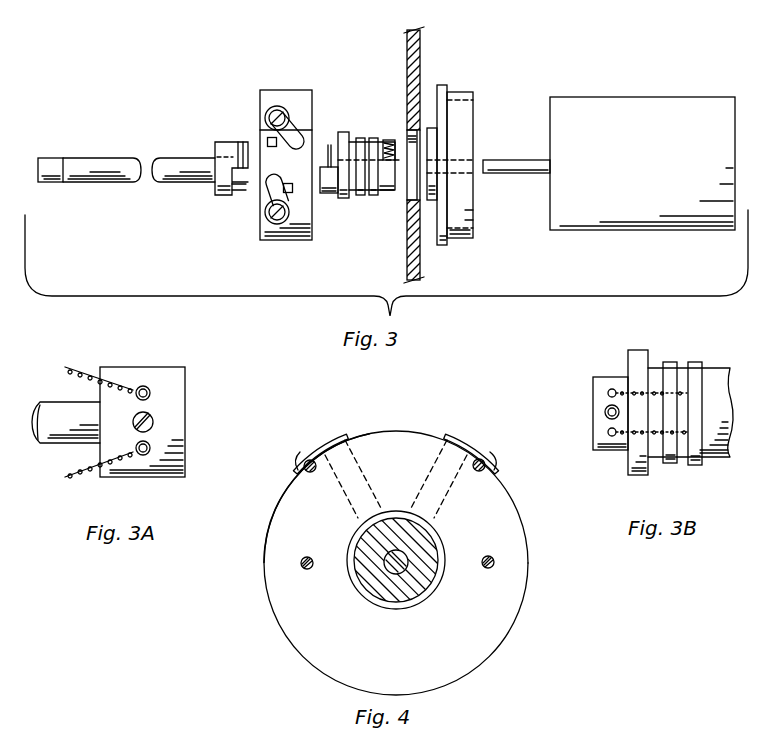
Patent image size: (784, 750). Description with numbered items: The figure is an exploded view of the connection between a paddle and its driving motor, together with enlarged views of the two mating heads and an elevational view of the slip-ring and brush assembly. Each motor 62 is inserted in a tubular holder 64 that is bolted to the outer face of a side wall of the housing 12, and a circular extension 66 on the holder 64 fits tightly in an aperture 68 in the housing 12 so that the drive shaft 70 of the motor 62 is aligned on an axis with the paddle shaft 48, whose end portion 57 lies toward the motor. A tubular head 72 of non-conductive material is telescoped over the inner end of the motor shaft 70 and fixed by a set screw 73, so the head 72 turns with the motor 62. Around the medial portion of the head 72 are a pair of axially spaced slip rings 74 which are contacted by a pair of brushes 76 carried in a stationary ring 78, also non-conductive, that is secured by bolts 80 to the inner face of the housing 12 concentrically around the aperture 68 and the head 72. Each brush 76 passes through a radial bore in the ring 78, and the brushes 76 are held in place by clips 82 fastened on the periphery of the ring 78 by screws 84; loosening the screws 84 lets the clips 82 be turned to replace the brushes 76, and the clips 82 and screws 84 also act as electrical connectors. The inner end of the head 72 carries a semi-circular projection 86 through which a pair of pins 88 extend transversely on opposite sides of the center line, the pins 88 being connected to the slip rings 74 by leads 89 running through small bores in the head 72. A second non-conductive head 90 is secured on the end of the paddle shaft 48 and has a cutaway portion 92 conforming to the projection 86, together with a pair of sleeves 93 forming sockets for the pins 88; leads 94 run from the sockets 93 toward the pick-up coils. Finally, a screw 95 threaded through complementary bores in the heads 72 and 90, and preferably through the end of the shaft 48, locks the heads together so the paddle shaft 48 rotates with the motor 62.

In FIG. 3, the housing 12 is at (407, 46).
In FIG. 3, the paddle shaft 48 is at (118, 162).
In FIG. 3A, the paddle shaft 48 is at (58, 405).
In FIG. 3, the rod end 57 is at (52, 165).
In FIG. 3, the motor 62 is at (620, 108).
In FIG. 3, the tubular holder 64 is at (466, 93).
In FIG. 3, the circular extension 66 is at (434, 137).
In FIG. 3, the aperture 68 is at (409, 133).
In FIG. 3, the drive shaft 70 is at (520, 173).
In FIG. 3, the tubular head 72 is at (346, 132).
In FIG. 3B, the tubular head 72 is at (638, 350).
In FIG. 3, the set screw 73 is at (389, 140).
In FIG. 3, the slip rings 74 is at (360, 195).
In FIG. 3B, the slip rings 74 is at (695, 362).
In FIG. 4, the slip rings 74 is at (428, 598).
In FIG. 3, the brushes 76 is at (265, 138).
In FIG. 4, the brushes 76 is at (352, 490).
In FIG. 3, the stationary ring 78 is at (293, 97).
In FIG. 4, the stationary ring 78 is at (294, 624).
In FIG. 4, the bolts 80 is at (300, 566).
In FIG. 3, the clips 82 is at (270, 196).
In FIG. 4, the clips 82 is at (333, 436).
In FIG. 3, the screws 84 is at (279, 224).
In FIG. 4, the screws 84 is at (300, 462).
In FIG. 3, the semi-circular projection 86 is at (322, 193).
In FIG. 3B, the semi-circular projection 86 is at (598, 397).
In FIG. 3, the pins 88 is at (329, 145).
In FIG. 3B, the pins 88 is at (608, 392).
In FIG. 3B, the leads 89 is at (618, 390).
In FIG. 3, the head 90 is at (220, 147).
In FIG. 3A, the head 90 is at (173, 394).
In FIG. 3, the cutaway portion 92 is at (240, 190).
In FIG. 3, the sleeves 93 is at (243, 140).
In FIG. 3A, the sleeves 93 is at (145, 386).
In FIG. 3A, the leads 94 is at (86, 368).
In FIG. 3A, the screw 95 is at (154, 426).
In FIG. 3B, the screw 95 is at (604, 414).